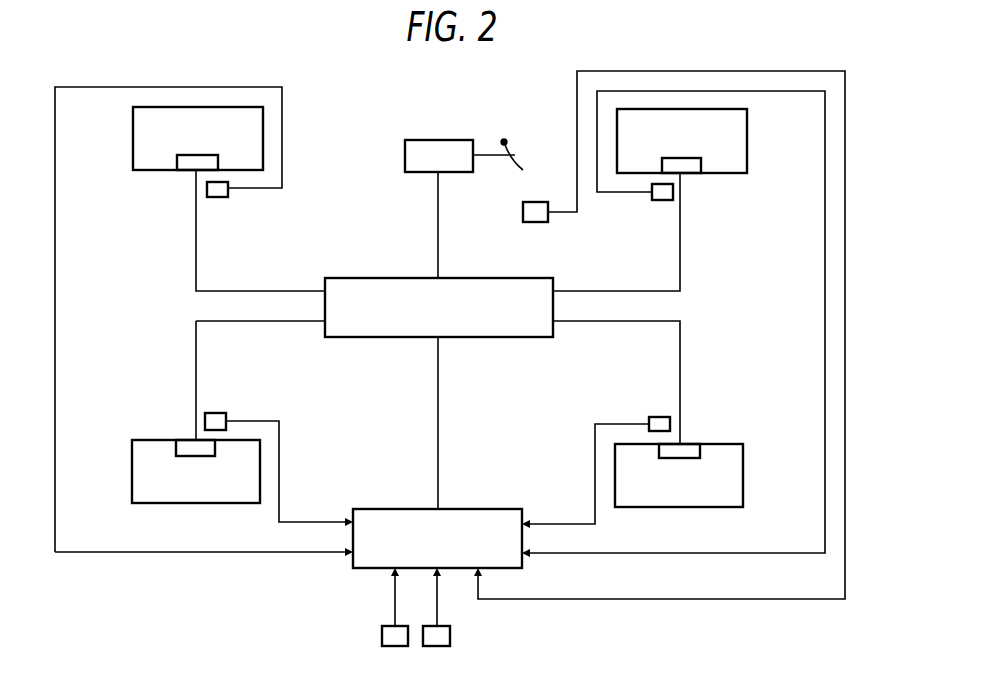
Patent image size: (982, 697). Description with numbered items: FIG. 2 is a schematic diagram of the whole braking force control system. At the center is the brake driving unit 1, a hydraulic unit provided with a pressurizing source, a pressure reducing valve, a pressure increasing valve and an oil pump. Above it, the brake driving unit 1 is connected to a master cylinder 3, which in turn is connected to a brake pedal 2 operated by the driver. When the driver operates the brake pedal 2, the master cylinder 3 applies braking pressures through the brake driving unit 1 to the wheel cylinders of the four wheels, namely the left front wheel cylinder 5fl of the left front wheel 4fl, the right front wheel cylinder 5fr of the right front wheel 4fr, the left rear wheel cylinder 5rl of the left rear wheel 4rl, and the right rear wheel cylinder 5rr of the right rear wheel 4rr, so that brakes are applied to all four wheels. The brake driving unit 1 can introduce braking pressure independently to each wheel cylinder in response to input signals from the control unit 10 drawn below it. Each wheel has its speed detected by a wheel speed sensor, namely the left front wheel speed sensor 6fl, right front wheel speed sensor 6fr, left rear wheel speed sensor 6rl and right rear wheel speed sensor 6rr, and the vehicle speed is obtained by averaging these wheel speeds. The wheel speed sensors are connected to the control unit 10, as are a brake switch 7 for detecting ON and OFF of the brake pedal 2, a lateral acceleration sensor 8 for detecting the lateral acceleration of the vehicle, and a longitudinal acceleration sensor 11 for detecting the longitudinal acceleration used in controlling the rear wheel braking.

The brake driving unit 1 is at (497, 278).
The brake pedal 2 is at (515, 157).
The master cylinder 3 is at (440, 140).
The right front wheel 4fr is at (133, 140).
The right front wheel cylinder 5fr is at (197, 155).
The right front wheel speed sensor 6fr is at (216, 198).
The left front wheel 4fl is at (132, 470).
The left front wheel cylinder 5fl is at (192, 456).
The left front wheel speed sensor 6fl is at (215, 413).
The right rear wheel 4rr is at (747, 142).
The right rear wheel cylinder 5rr is at (683, 158).
The right rear wheel speed sensor 6rr is at (660, 201).
The left rear wheel 4rl is at (743, 476).
The left rear wheel cylinder 5rl is at (678, 458).
The left rear wheel speed sensor 6rl is at (660, 417).
The brake switch 7 is at (523, 212).
The lateral acceleration sensor 8 is at (393, 647).
The control unit 10 is at (478, 509).
The longitudinal acceleration sensor 11 is at (435, 647).